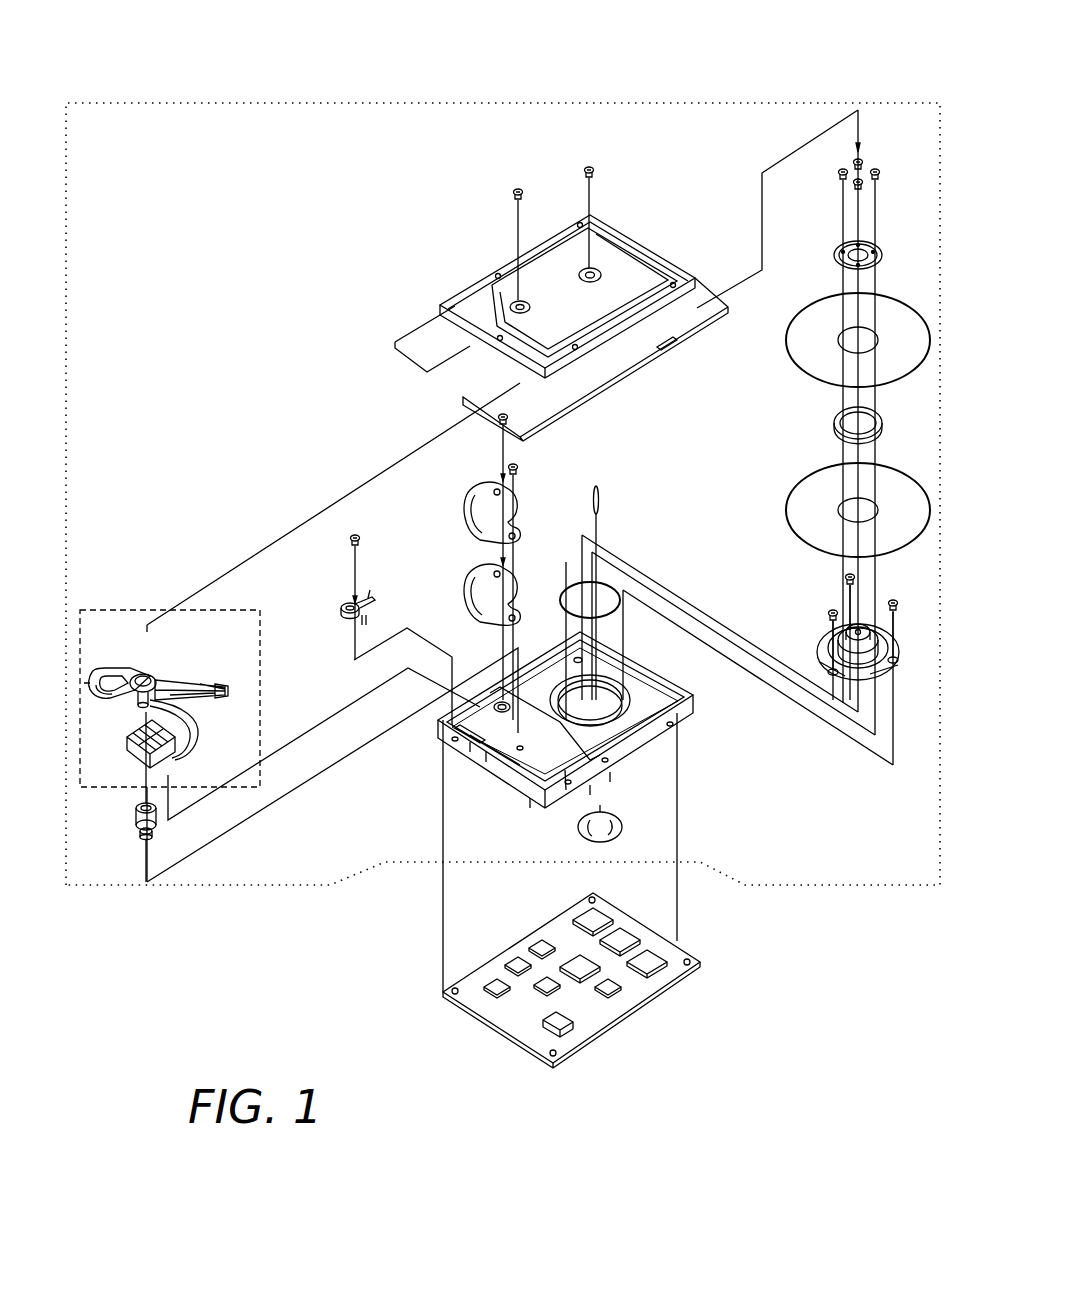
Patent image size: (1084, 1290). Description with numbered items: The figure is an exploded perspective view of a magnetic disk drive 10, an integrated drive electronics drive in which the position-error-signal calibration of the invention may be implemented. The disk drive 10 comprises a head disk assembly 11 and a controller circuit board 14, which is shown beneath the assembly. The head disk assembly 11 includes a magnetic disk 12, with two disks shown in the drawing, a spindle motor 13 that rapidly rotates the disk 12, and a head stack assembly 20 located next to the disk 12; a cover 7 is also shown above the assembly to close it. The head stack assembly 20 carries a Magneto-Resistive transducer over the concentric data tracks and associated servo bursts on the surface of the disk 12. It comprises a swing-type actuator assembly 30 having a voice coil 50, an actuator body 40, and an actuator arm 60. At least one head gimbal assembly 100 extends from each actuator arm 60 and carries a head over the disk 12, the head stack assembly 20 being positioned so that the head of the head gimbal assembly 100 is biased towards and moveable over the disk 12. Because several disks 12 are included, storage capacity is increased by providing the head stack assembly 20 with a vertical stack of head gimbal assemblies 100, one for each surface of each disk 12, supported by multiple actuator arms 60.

The magnetic disk drive 10 is at (300, 66).
The cover 7 is at (465, 282).
The head disk assembly 11 is at (775, 895).
The magnetic disk 12 is at (797, 487).
The spindle motor 13 is at (830, 648).
The controller circuit board 14 is at (620, 1018).
The head stack assembly 20 is at (118, 610).
The swing-type actuator assembly 30 is at (88, 670).
The actuator body 40 is at (146, 678).
The voice coil 50 is at (122, 700).
The actuator arm 60 is at (188, 700).
The head gimbal assembly 100 is at (214, 685).